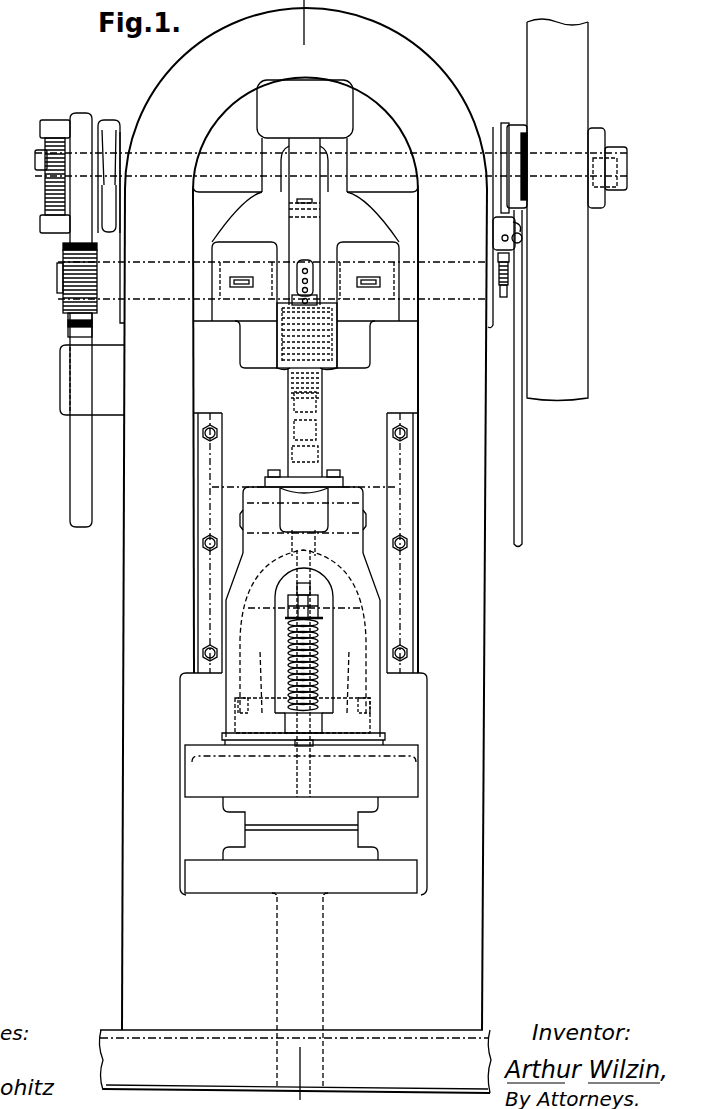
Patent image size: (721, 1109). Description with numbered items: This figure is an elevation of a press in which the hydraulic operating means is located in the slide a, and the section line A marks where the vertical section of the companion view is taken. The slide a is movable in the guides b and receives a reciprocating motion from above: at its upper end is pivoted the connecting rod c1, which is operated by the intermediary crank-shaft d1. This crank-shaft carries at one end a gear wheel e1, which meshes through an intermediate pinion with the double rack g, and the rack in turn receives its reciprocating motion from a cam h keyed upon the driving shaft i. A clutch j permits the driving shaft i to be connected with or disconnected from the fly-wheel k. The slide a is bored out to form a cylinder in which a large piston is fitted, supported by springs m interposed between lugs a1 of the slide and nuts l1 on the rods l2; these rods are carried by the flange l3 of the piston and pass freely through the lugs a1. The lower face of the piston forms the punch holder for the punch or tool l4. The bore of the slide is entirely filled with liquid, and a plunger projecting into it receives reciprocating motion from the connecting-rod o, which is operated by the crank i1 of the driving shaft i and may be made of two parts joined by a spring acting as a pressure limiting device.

The section line A— A is at (314, 550).
The slide a is at (303, 645).
The lugs a1 is at (315, 730).
The guides b is at (200, 512).
The connecting rod c1 is at (320, 448).
The intermediary crank-shaft d1 is at (245, 262).
The gear wheel e1 is at (63, 300).
The double rack g is at (68, 322).
The cam h is at (55, 196).
The driving shaft i is at (38, 161).
The crank i1 is at (323, 215).
The clutch j is at (523, 236).
The fly-wheel k is at (564, 283).
The nuts l1 is at (313, 613).
The rods l2 is at (297, 588).
The flange l3 is at (301, 771).
The punch or tool l4 is at (301, 845).
The springs m is at (320, 668).
The connecting-rod o is at (304, 267).